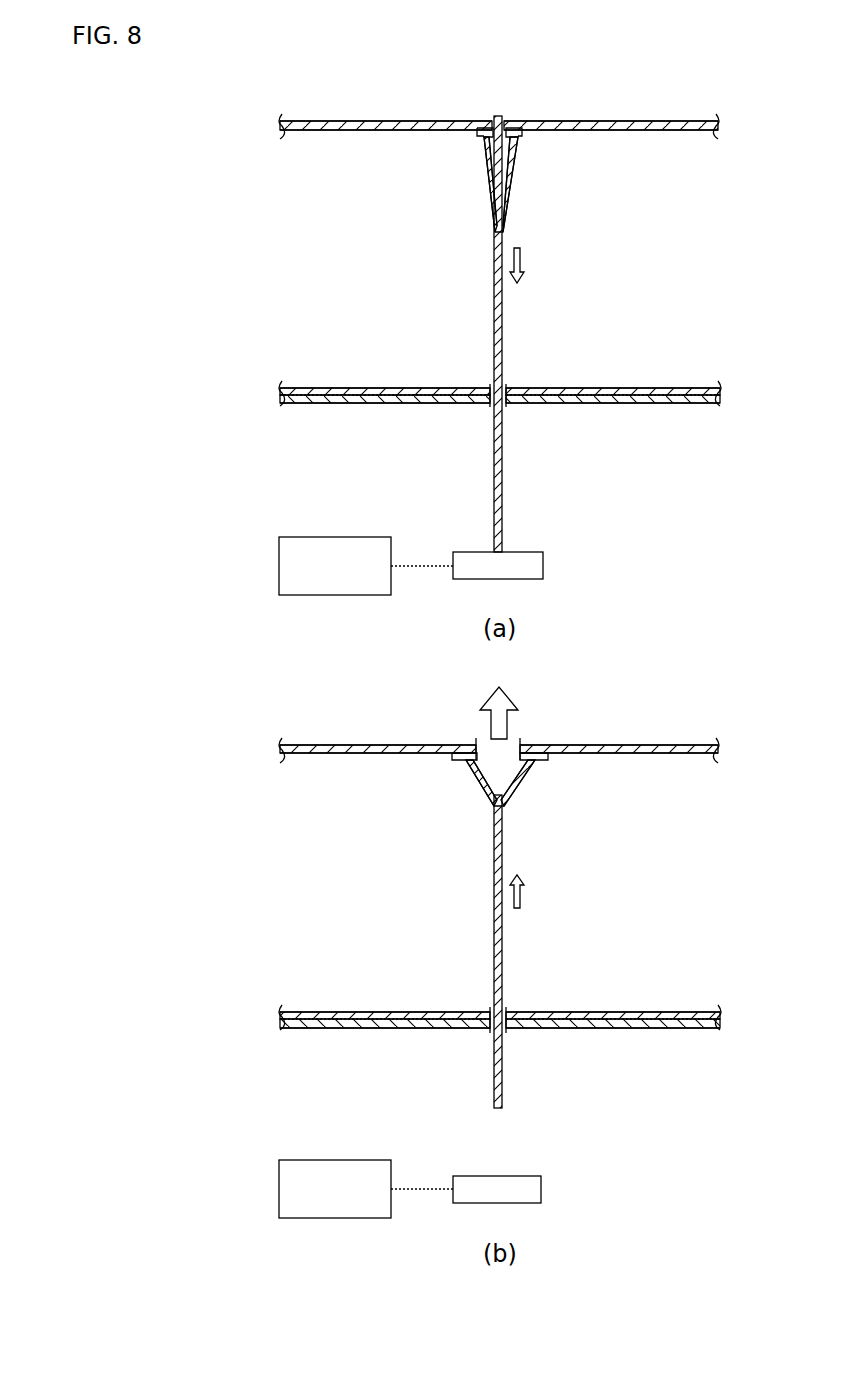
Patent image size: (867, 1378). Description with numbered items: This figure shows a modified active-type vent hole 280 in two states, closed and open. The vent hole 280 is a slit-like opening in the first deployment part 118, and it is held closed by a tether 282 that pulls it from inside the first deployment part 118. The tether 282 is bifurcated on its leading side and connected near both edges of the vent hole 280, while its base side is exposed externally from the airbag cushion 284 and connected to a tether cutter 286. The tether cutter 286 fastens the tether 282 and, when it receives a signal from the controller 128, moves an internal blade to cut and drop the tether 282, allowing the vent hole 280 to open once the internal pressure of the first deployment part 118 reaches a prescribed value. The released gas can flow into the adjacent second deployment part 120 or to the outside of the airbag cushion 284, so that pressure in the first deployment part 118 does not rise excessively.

The first deployment part 118 is at (672, 118).
The second deployment part 120 is at (663, 403).
The vent hole 280 is at (497, 118).
The tether 282 is at (502, 335).
The airbag cushion 284 is at (300, 406).
The controller 128 is at (360, 537).
The tether cutter 286 is at (535, 552).